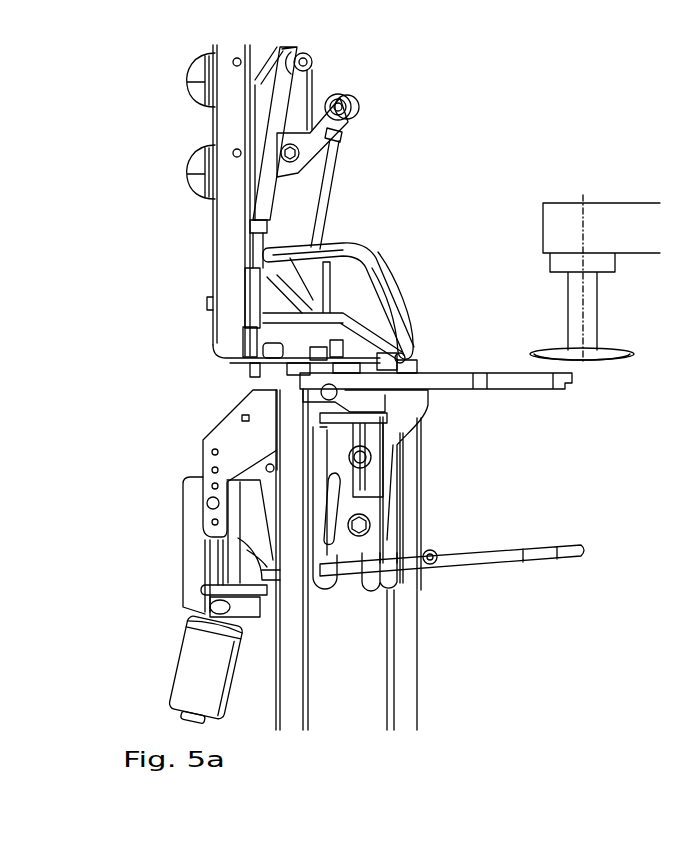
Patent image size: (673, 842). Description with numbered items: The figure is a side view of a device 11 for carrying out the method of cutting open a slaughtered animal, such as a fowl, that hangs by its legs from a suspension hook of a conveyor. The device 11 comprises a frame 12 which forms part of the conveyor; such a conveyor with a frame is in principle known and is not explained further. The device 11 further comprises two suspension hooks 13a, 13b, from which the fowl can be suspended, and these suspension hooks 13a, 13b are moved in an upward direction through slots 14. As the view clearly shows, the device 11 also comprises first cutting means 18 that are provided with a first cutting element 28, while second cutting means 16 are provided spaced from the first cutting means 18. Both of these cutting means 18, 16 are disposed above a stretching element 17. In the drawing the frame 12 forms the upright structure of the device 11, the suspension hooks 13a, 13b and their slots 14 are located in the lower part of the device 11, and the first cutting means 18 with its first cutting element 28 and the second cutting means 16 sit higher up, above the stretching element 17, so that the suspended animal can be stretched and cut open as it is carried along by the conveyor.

The device 11 is at (141, 469).
The frame 12 is at (217, 229).
The suspension hook 13a is at (350, 573).
The suspension hook 13b is at (500, 563).
The slots 14 is at (380, 515).
The second cutting means 16 is at (391, 300).
The stretching element 17 is at (347, 297).
The first cutting means 18 is at (625, 225).
The first cutting element 28 is at (617, 355).